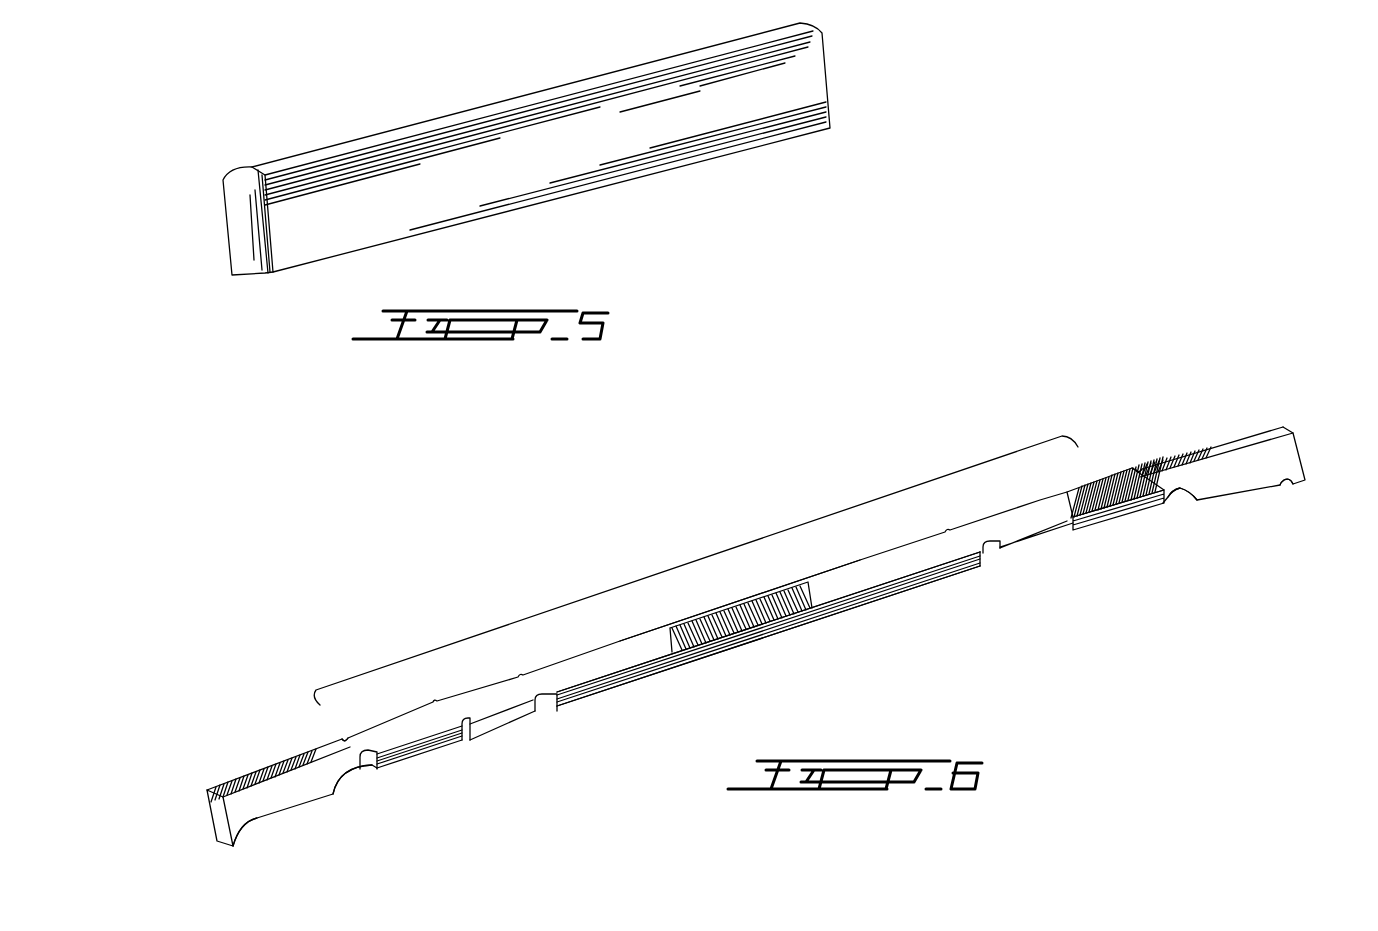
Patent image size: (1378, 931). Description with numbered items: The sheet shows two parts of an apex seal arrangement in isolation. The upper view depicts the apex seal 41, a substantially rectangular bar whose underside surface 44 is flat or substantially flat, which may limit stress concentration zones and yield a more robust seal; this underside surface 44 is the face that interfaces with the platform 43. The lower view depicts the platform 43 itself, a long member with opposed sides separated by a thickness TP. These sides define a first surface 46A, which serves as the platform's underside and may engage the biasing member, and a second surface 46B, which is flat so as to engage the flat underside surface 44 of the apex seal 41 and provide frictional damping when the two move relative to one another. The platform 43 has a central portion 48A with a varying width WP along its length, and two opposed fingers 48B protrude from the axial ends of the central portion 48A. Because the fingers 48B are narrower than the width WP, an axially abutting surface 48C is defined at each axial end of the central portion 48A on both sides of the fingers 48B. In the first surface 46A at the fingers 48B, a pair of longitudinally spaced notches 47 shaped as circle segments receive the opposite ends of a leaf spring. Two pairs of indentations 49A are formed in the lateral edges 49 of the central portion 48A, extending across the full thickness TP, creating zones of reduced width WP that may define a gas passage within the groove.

In FIG. 5, the apex seal 41 is at (793, 52).
In FIG. 5, the underside surface 44 is at (723, 157).
In FIG. 6, the platform 43 is at (1305, 425).
In FIG. 6, the fingers 48B is at (200, 763).
In FIG. 6, the axially abutting surface 48C is at (357, 757).
In FIG. 6, the notches 47 is at (253, 830).
In FIG. 6, the indentations 49A is at (500, 690).
In FIG. 6, the width of the central portion WP is at (634, 671).
In FIG. 6, the thickness of the platform TP is at (1118, 458).
In FIG. 6, the central portion 48A is at (593, 642).
In FIG. 6, the second surface 46B is at (887, 570).
In FIG. 6, the first surface 46A is at (965, 582).
In FIG. 6, the lateral edges 49 is at (805, 625).